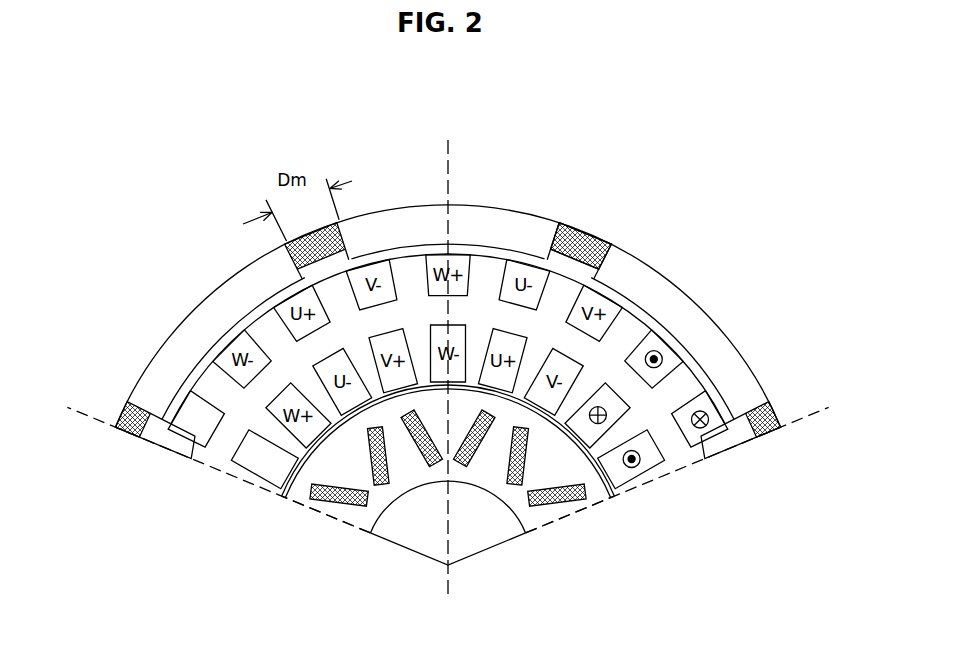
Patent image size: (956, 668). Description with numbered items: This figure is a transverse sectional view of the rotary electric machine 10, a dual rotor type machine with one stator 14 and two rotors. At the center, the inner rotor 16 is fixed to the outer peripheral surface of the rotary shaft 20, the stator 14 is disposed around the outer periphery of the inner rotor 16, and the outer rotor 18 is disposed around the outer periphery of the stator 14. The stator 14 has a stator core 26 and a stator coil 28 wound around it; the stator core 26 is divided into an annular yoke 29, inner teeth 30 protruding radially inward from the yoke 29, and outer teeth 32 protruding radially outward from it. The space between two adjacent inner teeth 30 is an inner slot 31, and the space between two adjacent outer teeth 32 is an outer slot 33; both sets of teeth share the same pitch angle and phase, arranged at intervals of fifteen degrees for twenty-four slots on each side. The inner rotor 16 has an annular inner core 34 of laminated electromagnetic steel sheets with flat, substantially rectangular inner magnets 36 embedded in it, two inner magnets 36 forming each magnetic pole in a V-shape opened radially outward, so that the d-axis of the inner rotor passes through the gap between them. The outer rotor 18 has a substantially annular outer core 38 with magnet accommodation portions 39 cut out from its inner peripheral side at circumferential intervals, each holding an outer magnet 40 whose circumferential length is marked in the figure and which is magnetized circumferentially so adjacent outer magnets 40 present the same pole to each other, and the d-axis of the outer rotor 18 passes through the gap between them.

The rotary electric machine 10 is at (482, 138).
The stator 14 is at (165, 463).
The inner rotor 16 is at (559, 528).
The outer rotor 18 is at (774, 449).
The rotary shaft 20 is at (478, 540).
The stator core 26 is at (680, 495).
The stator coil 28 is at (672, 442).
The yoke 29 is at (676, 474).
The inner teeth 30 is at (619, 443).
The inner slot 31 is at (268, 465).
The outer teeth 32 is at (722, 438).
The outer slot 33 is at (195, 440).
The inner core 34 is at (362, 512).
The inner magnet 36 is at (333, 503).
The outer core 38 is at (415, 215).
The magnet accommodation portion 39 is at (573, 227).
The outer magnet 40 is at (585, 233).